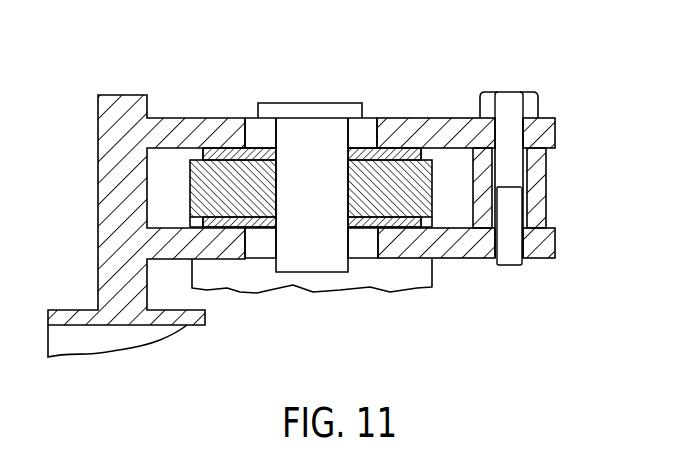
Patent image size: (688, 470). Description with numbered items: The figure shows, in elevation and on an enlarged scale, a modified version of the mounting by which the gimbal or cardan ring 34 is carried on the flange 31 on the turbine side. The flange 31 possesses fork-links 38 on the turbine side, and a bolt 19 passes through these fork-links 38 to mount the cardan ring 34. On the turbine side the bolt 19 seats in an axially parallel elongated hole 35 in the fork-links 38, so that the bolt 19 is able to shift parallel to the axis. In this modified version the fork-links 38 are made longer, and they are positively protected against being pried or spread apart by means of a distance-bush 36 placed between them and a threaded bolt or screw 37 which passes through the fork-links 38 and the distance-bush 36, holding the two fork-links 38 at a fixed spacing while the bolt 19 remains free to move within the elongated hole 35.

The bolt 19 is at (321, 167).
The flange on the turbine side 31 is at (203, 114).
The gimbal or cardan ring 34 is at (238, 275).
The elongated hole 35 is at (363, 123).
The distance-bush 36 is at (533, 190).
The threaded bolt or screw 37 is at (508, 103).
The fork-link on the turbine side 38 is at (443, 133).